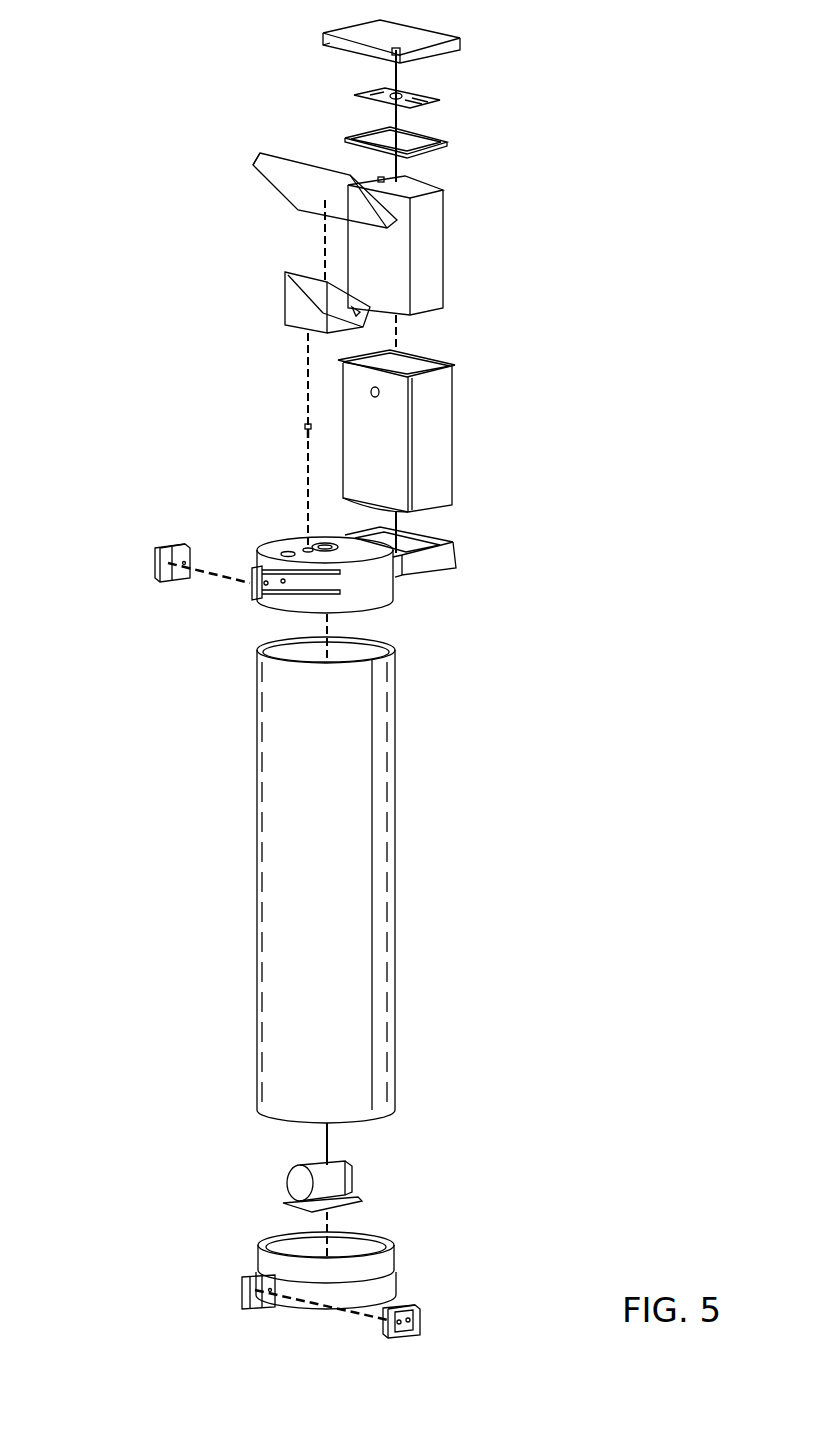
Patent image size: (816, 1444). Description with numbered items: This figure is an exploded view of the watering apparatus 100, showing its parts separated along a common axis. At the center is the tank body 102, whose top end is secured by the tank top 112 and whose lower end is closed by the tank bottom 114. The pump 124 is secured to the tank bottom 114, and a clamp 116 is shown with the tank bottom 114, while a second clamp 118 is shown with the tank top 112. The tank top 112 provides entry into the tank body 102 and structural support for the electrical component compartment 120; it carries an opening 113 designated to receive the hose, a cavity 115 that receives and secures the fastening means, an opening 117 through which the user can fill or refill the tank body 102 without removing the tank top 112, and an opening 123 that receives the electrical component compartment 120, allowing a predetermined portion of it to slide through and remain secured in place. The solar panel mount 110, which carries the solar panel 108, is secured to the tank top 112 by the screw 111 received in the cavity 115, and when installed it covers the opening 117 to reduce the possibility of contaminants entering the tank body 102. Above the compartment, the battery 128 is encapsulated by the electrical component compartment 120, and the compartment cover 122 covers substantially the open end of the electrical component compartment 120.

The watering apparatus 100 is at (205, 853).
The tank body 102 is at (395, 840).
The solar panel 108 is at (285, 163).
The solar panel mount 110 is at (298, 302).
The screw 111 is at (305, 426).
The tank top 112 is at (405, 572).
The opening 113 is at (287, 550).
The tank bottom 114 is at (393, 1276).
The cavity 115 is at (307, 546).
The clamp 116 is at (420, 1322).
The opening 117 is at (322, 540).
The clamp 118 is at (155, 563).
The electrical component compartment 120 is at (440, 432).
The compartment cover 122 is at (433, 33).
The opening 123 is at (428, 545).
The pump 124 is at (352, 1178).
The battery 128 is at (436, 228).